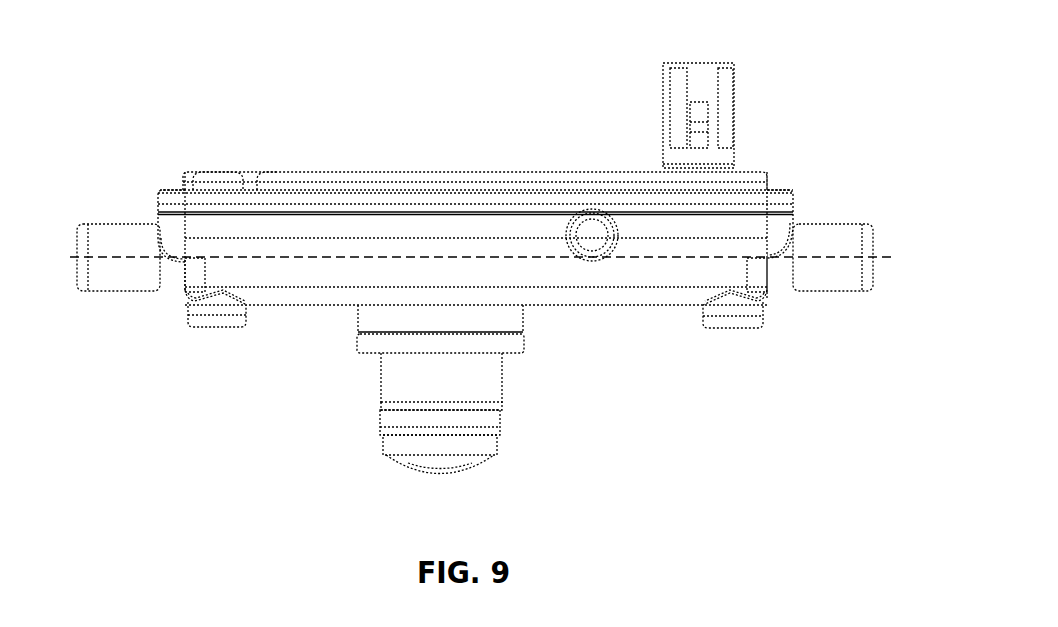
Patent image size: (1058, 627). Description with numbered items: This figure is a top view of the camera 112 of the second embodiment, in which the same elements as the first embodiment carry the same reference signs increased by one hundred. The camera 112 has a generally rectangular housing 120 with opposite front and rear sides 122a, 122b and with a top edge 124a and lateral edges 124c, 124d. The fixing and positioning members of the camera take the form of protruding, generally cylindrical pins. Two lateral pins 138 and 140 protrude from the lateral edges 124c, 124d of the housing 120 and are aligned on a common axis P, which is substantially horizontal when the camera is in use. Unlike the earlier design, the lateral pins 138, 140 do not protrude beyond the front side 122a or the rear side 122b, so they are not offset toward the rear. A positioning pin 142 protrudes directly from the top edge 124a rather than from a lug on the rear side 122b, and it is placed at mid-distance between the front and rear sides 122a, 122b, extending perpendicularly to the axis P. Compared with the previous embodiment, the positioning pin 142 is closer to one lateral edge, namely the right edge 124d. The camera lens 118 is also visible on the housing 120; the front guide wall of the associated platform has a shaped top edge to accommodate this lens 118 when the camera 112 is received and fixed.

The camera 112 is at (186, 104).
The camera lens 118 is at (487, 383).
The housing 120 is at (688, 250).
The front side 122a is at (297, 303).
The rear side 122b is at (312, 175).
The top edge 124a is at (390, 220).
The lateral edge 124c is at (160, 222).
The right lateral edge 124d is at (785, 217).
The lateral pin 138 is at (132, 270).
The lateral pin 140 is at (817, 280).
The positioning pin 142 is at (592, 232).
The axis P is at (877, 260).